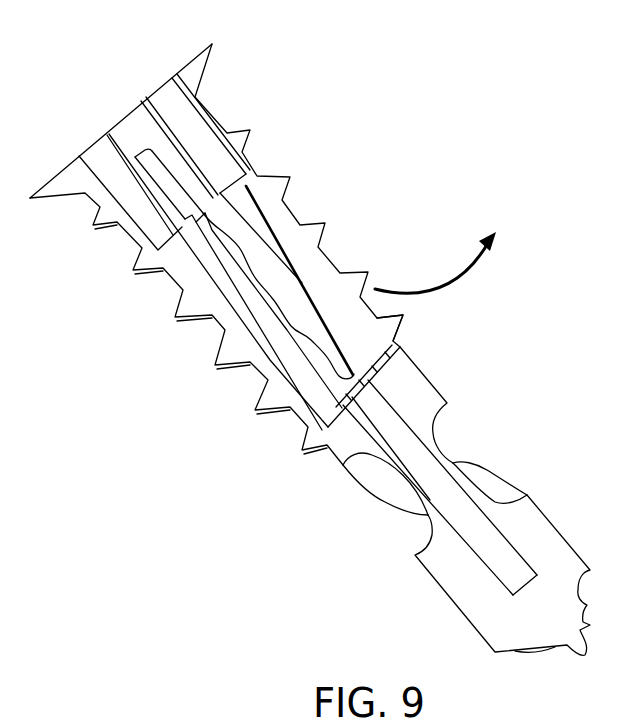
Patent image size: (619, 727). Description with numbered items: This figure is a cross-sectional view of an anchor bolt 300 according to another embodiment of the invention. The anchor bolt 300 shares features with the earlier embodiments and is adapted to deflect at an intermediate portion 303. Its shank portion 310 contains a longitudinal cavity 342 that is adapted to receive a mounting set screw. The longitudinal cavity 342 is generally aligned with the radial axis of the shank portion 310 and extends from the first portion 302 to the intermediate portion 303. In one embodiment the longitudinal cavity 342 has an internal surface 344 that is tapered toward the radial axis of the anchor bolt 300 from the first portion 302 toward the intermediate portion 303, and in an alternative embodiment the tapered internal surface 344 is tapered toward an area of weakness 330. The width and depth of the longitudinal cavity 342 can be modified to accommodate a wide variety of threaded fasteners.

The anchor bolt 300 is at (378, 157).
The first portion 302 is at (209, 108).
The intermediate portion 303 is at (397, 329).
The shank portion 310 is at (318, 238).
The area of weakness 330 is at (407, 343).
The longitudinal cavity 342 is at (244, 195).
The internal surface 344 is at (260, 216).